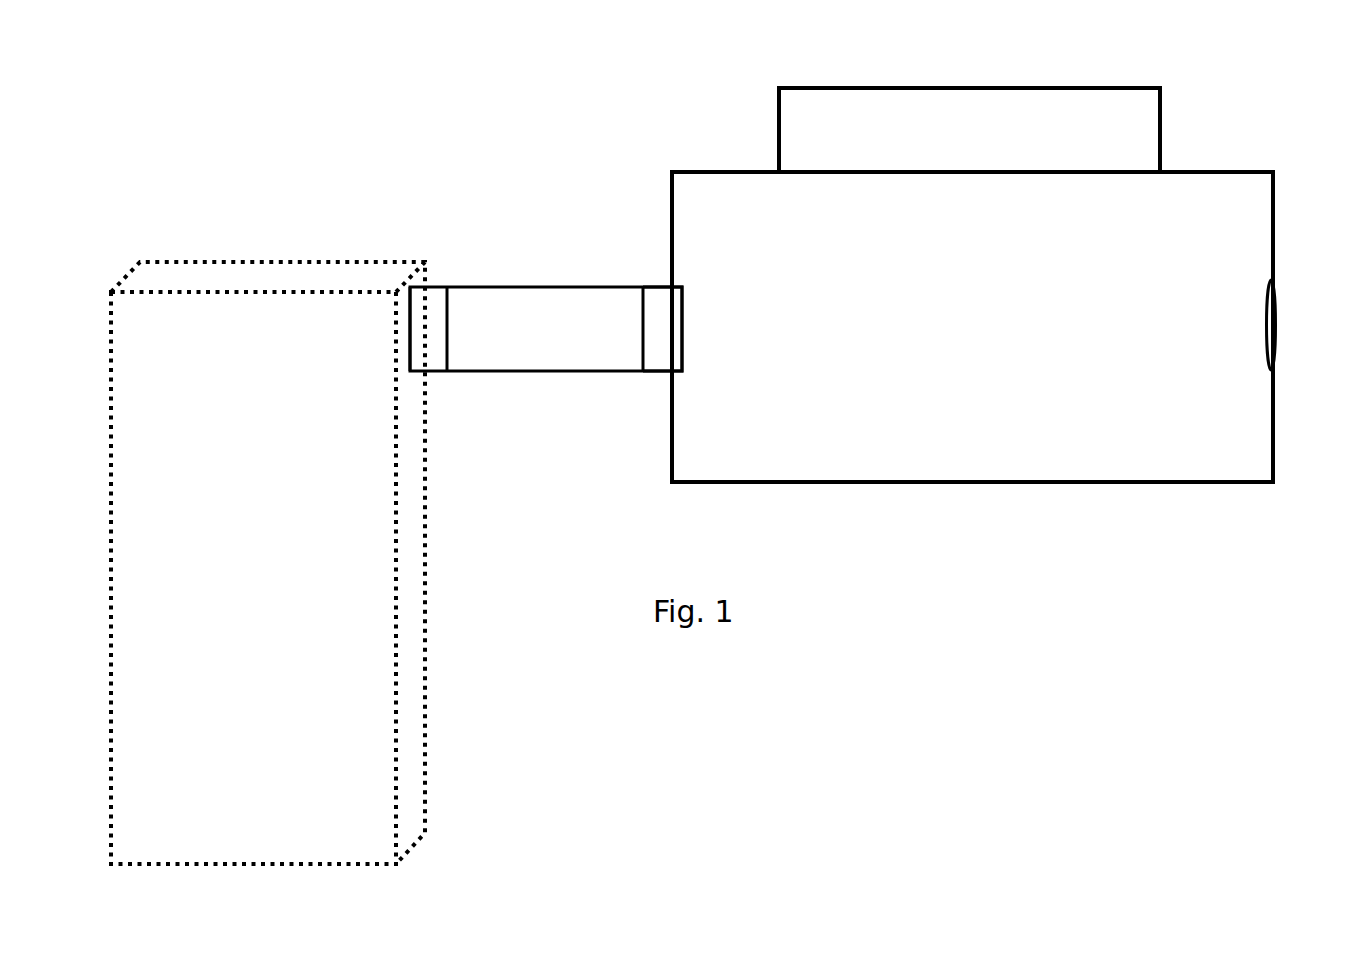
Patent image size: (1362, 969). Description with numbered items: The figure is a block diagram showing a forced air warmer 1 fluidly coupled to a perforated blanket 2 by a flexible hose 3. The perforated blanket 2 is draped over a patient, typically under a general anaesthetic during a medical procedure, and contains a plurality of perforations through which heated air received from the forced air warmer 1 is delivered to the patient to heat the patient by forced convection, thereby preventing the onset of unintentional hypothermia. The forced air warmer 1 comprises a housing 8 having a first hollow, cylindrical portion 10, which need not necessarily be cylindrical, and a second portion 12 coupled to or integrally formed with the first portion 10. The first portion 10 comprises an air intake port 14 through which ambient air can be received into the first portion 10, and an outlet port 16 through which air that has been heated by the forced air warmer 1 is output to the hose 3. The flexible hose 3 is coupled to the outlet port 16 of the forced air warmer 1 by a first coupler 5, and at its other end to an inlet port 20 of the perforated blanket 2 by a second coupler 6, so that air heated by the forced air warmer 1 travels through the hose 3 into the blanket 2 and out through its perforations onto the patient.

The forced air warmer 1 is at (997, 335).
The perforated blanket 2 is at (412, 689).
The flexible hose 3 is at (562, 333).
The first coupler 5 is at (658, 310).
The second coupler 6 is at (427, 308).
The housing 8 is at (1213, 103).
The first hollow cylindrical portion 10 is at (705, 172).
The second portion 12 is at (843, 102).
The air intake port 14 is at (1275, 318).
The outlet port 16 is at (705, 306).
The inlet port 20 is at (398, 336).